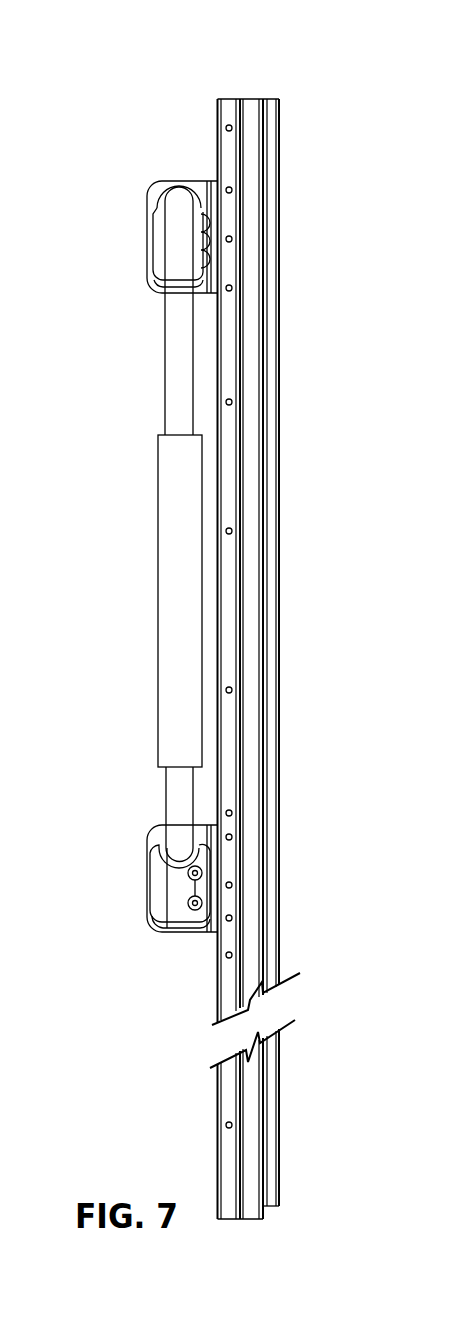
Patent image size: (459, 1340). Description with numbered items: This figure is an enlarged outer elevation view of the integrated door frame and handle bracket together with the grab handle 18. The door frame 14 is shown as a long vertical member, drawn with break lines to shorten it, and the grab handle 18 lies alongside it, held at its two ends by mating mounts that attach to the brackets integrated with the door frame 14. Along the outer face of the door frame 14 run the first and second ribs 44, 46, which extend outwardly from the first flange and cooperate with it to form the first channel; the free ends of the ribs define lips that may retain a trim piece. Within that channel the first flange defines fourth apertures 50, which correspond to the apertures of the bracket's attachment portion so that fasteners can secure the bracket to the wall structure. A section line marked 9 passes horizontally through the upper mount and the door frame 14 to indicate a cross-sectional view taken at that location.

The section line 9- 9 is at (160, 239).
The door frame 14 is at (278, 693).
The grab handle 18 is at (168, 659).
The first rib 44 is at (238, 99).
The second rib 46 is at (221, 99).
The fourth aperture 50 is at (226, 128).